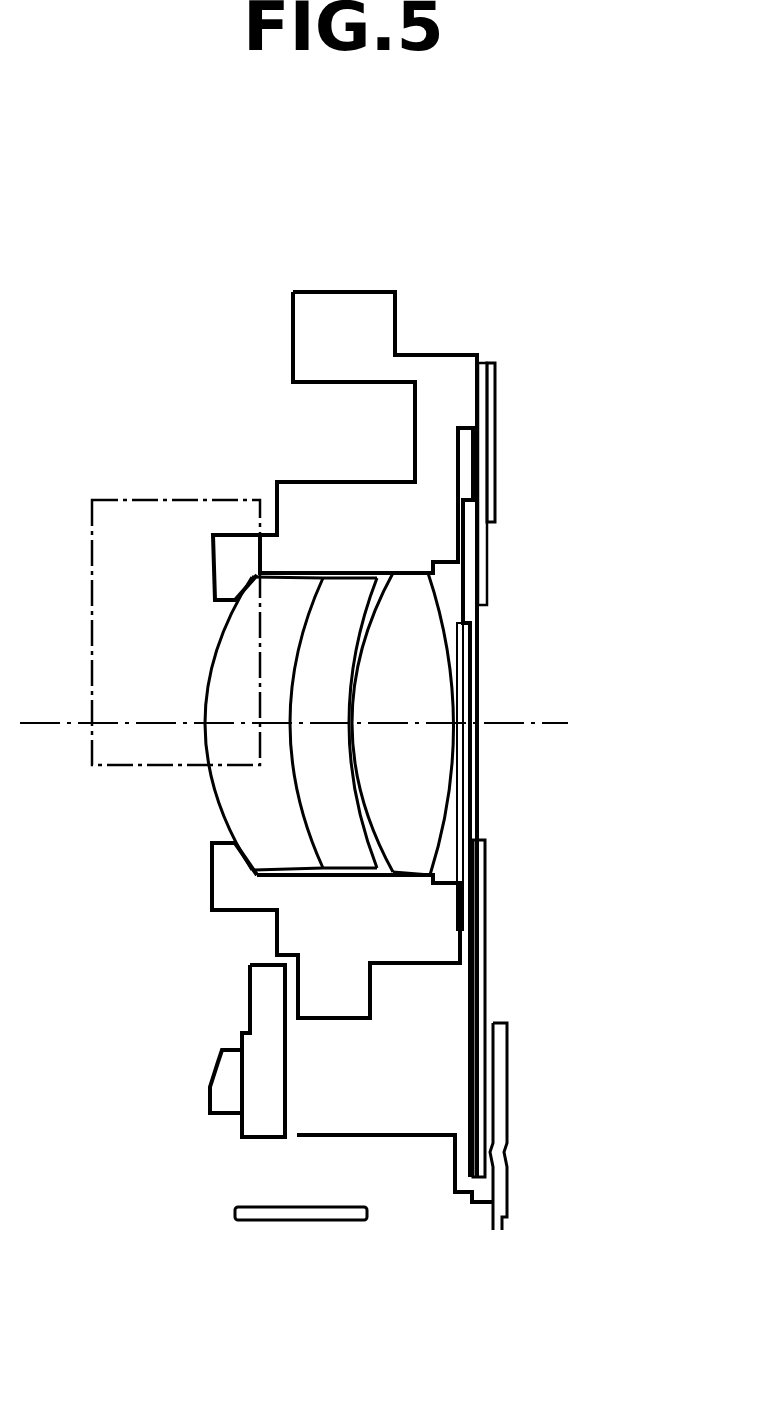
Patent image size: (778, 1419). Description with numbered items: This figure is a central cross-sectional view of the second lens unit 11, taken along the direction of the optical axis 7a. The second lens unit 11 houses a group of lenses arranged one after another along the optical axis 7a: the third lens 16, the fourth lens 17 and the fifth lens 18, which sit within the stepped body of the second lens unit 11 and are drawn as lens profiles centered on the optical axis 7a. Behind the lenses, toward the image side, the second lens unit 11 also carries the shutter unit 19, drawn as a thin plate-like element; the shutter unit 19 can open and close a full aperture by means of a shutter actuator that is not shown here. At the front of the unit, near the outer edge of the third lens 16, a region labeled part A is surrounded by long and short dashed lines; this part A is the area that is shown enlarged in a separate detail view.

The second lens unit 11 is at (348, 317).
The shutter unit 19 is at (490, 360).
The third lens 16 is at (237, 786).
The fourth lens 17 is at (323, 813).
The fifth lens 18 is at (437, 673).
The optical axis 7a is at (540, 725).
The part A is at (198, 538).